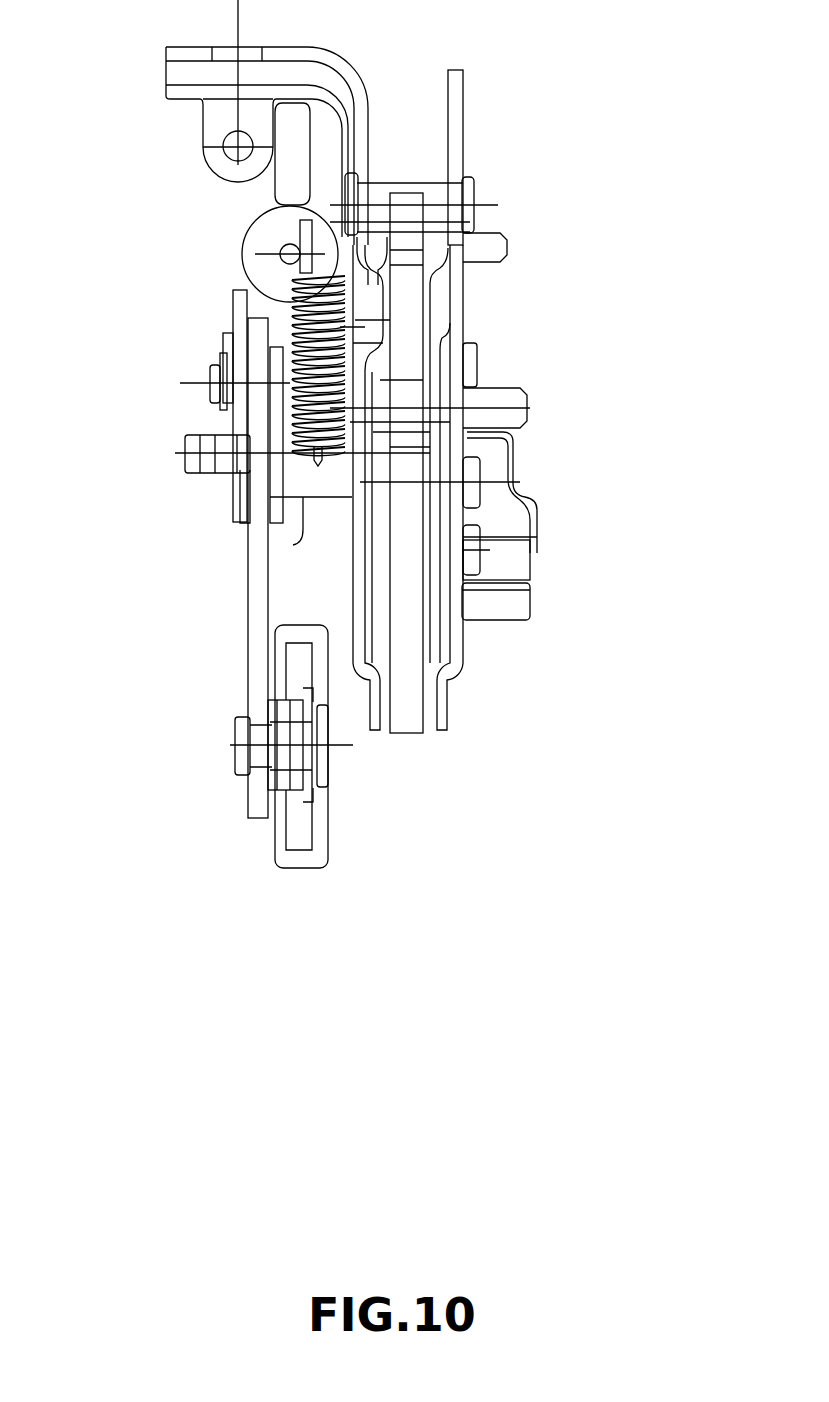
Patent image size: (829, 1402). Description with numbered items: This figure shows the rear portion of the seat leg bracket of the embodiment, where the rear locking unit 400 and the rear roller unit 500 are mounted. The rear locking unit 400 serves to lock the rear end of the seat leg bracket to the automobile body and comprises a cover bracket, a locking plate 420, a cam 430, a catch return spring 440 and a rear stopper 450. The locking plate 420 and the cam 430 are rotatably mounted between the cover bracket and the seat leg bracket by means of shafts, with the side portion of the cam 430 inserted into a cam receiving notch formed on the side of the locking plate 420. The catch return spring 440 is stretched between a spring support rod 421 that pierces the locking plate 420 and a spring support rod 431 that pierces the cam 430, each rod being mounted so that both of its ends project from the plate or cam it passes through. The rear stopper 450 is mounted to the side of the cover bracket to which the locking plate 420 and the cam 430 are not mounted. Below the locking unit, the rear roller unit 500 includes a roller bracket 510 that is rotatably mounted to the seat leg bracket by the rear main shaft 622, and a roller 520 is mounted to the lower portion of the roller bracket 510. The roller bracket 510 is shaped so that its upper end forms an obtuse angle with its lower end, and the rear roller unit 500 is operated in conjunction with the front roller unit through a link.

The rear locking unit 400 is at (535, 178).
The spring support rod 431 is at (305, 226).
The cam 430 is at (408, 288).
The catch return spring 440 is at (290, 320).
The rear main shaft 622 is at (290, 490).
The spring support rod 421 is at (303, 537).
The locking plate 420 is at (490, 525).
The rear stopper 450 is at (522, 605).
The rear roller unit 500 is at (225, 845).
The roller bracket 510 is at (262, 648).
The roller 520 is at (317, 828).